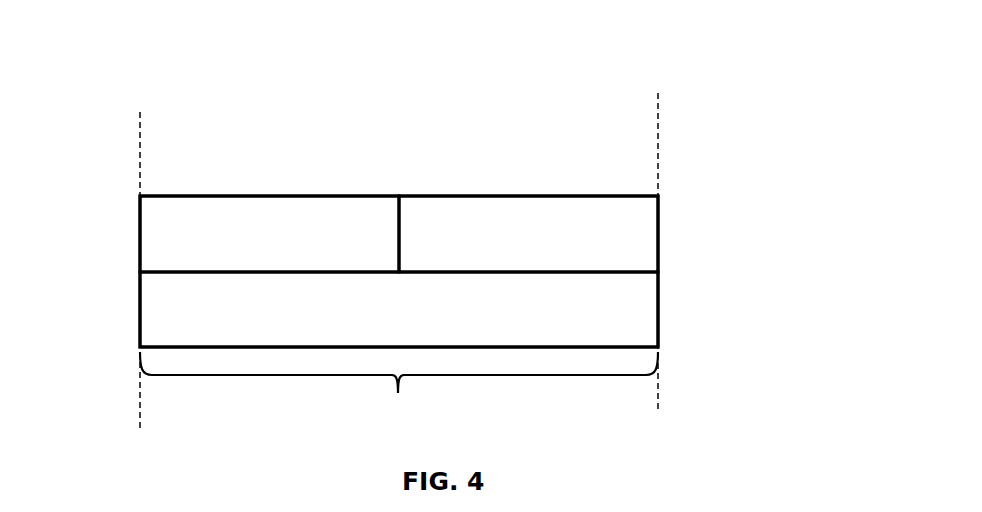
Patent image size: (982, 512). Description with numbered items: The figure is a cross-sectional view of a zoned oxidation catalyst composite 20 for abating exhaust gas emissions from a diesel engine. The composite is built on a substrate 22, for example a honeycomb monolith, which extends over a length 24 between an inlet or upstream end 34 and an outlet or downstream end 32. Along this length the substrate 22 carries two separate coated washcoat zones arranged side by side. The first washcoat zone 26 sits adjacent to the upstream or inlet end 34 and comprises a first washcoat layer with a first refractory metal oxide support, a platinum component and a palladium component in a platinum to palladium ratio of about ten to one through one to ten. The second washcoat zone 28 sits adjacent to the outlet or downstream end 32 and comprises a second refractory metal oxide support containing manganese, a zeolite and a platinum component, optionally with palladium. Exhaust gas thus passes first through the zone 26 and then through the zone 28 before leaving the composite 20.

The zoned oxidation catalyst composite 20 is at (710, 63).
The substrate 22 is at (637, 309).
The length 24 is at (399, 392).
The first washcoat zone 26 is at (160, 234).
The second washcoat zone 28 is at (627, 234).
The outlet or downstream end 32 is at (658, 120).
The inlet or upstream end 34 is at (140, 132).